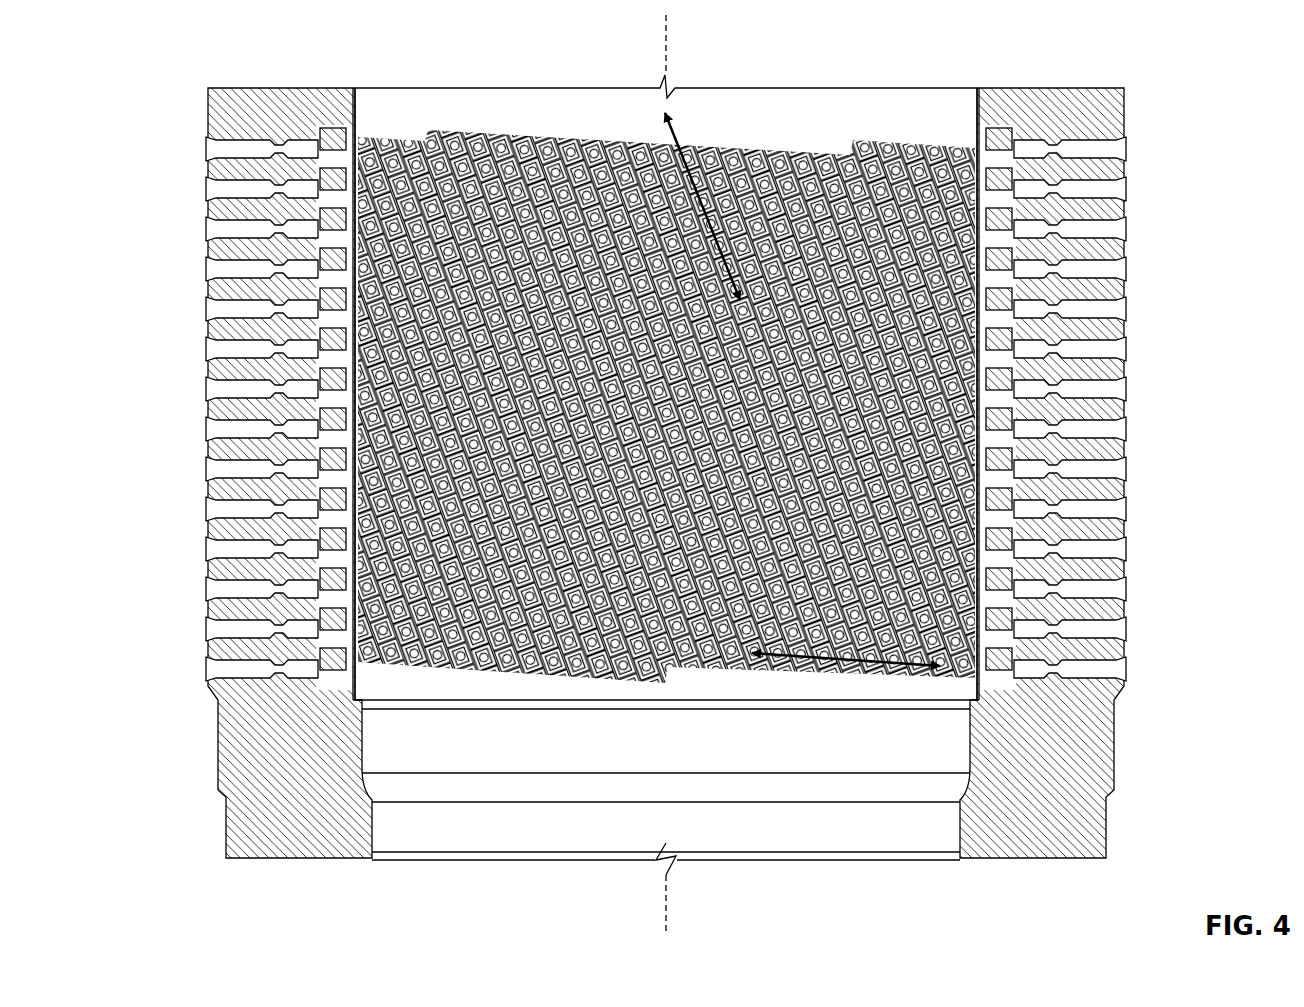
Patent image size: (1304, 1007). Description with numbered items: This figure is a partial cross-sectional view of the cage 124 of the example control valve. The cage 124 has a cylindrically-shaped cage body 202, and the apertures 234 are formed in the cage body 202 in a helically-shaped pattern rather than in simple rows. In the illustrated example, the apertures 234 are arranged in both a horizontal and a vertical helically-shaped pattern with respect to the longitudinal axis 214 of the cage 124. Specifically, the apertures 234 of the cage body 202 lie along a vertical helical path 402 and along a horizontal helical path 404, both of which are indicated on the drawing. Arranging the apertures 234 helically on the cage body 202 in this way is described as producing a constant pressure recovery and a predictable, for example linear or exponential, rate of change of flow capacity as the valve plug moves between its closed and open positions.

The cage 124 is at (716, 450).
The cage body 202 is at (490, 108).
The longitudinal axis 214 is at (670, 887).
The apertures 234 is at (243, 152).
The vertical helical path 402 is at (678, 132).
The horizontal helical path 404 is at (858, 660).